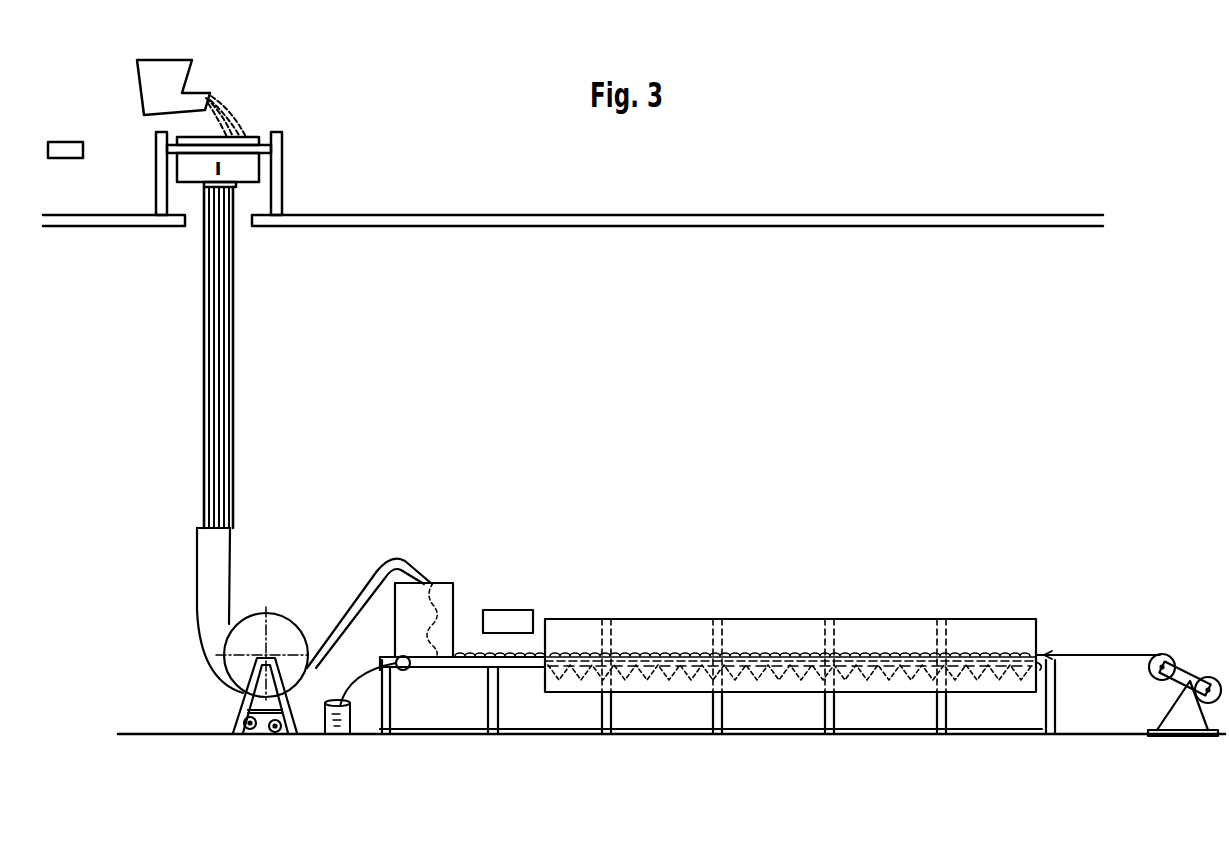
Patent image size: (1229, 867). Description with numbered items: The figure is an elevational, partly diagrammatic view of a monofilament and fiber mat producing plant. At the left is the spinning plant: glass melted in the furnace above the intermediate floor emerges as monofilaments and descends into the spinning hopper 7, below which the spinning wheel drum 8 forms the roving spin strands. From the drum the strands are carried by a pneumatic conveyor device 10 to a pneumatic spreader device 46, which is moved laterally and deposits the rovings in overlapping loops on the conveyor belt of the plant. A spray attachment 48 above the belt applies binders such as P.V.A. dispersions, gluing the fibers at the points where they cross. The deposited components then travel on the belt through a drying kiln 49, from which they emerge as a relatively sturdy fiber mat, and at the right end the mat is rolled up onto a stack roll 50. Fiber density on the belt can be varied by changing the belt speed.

The spinning hopper 7 is at (210, 533).
The spinning wheel drum 8 is at (257, 625).
The pneumatic conveyor device 10 is at (387, 565).
The pneumatic spreader device 46 is at (443, 597).
The spray attachment 48 is at (515, 620).
The drying kiln 49 is at (600, 633).
The stack roll 50 is at (1160, 656).